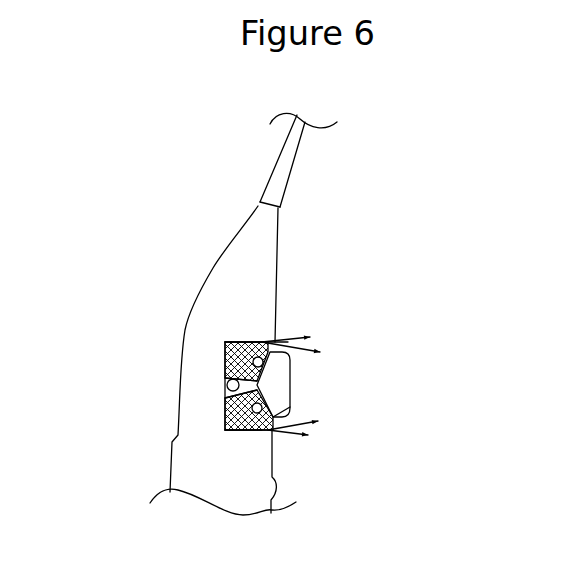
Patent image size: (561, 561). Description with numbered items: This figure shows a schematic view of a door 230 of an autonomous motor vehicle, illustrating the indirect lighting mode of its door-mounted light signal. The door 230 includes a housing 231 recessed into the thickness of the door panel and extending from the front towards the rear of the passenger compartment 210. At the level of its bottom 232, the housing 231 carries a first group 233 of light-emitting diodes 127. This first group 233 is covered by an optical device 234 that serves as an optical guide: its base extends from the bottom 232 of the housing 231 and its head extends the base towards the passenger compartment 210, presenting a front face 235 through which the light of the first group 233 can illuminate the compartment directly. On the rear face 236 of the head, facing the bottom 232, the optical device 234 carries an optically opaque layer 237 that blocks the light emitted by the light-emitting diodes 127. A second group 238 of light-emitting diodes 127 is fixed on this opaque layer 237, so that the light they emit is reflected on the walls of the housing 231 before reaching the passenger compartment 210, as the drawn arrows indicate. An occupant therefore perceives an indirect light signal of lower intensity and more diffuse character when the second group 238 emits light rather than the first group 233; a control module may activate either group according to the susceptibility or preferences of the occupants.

The door 230 is at (183, 180).
The passenger compartment 210 is at (352, 276).
The housing 231 is at (218, 338).
The bottom 232 is at (225, 423).
The first group 233 is at (223, 385).
The light-emitting diodes 127 is at (225, 390).
The optical device 234 is at (297, 370).
The front face 235 is at (290, 407).
The rear face 236 is at (261, 356).
The optically opaque layer 237 is at (262, 413).
The second group 238 is at (240, 342).